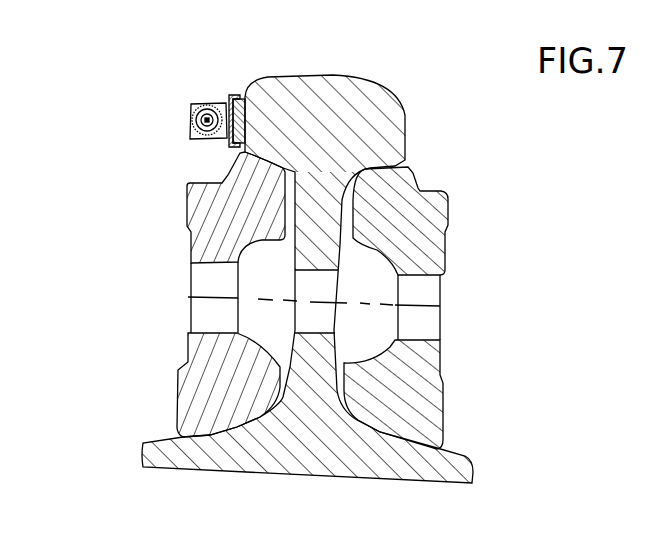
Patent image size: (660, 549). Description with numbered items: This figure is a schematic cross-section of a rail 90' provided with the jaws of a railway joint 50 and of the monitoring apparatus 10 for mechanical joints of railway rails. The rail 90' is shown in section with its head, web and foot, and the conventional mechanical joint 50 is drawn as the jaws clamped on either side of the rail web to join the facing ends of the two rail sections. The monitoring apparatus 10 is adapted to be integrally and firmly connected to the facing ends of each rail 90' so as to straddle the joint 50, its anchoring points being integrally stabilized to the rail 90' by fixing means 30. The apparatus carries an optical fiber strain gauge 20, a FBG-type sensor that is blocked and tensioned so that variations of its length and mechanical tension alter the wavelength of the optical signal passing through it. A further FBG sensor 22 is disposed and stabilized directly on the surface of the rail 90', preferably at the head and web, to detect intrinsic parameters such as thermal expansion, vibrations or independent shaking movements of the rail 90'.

The monitoring apparatus 10 is at (200, 83).
The optical fiber strain gauge 20 is at (193, 120).
The fixing means 30 is at (238, 95).
The further FBG sensors 22 is at (245, 97).
The rail 90' is at (307, 264).
The mechanical joint 50 is at (480, 172).